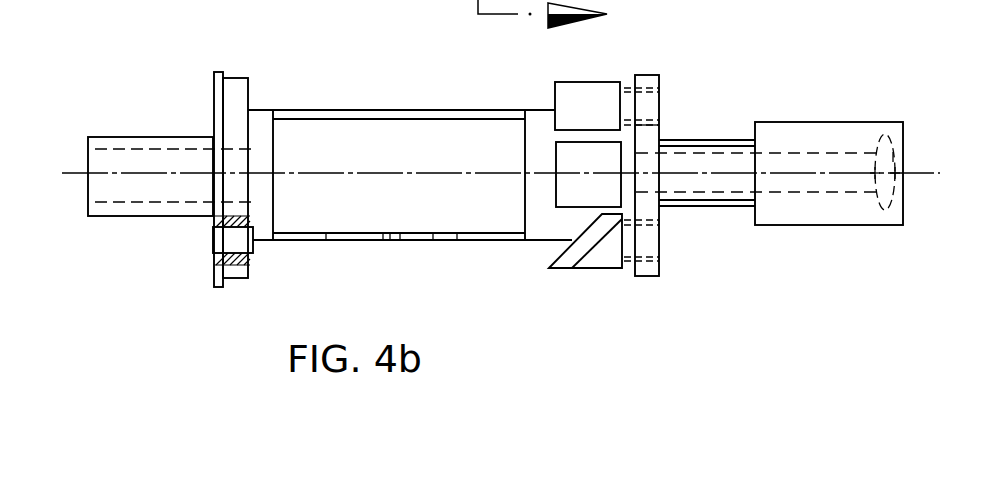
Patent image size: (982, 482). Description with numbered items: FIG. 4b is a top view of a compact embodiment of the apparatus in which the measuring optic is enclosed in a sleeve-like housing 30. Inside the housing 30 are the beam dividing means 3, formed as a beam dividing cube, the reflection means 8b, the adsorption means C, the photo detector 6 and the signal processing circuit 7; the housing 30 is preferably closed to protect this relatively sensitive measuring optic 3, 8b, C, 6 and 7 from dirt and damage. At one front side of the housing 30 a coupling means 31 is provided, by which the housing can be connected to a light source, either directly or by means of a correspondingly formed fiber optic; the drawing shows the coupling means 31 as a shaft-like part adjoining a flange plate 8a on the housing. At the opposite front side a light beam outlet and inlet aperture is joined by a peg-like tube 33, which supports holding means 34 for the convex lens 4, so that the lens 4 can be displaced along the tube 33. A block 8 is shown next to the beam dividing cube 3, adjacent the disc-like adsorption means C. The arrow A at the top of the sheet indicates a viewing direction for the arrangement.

The coupling means 31 is at (143, 157).
The flange plate 8a is at (248, 92).
The photo detector 6 is at (227, 242).
The signal processing circuit 7 is at (348, 223).
The support block 8 is at (570, 80).
The beam dividing means 3 is at (568, 200).
The reflection means 8b is at (603, 263).
The adsorption means C is at (598, 95).
The housing 30 is at (653, 130).
The peg-like tube 33 is at (690, 183).
The holding means 34 is at (832, 213).
The convex lens 4 is at (883, 158).
The viewing direction arrow A is at (556, 16).